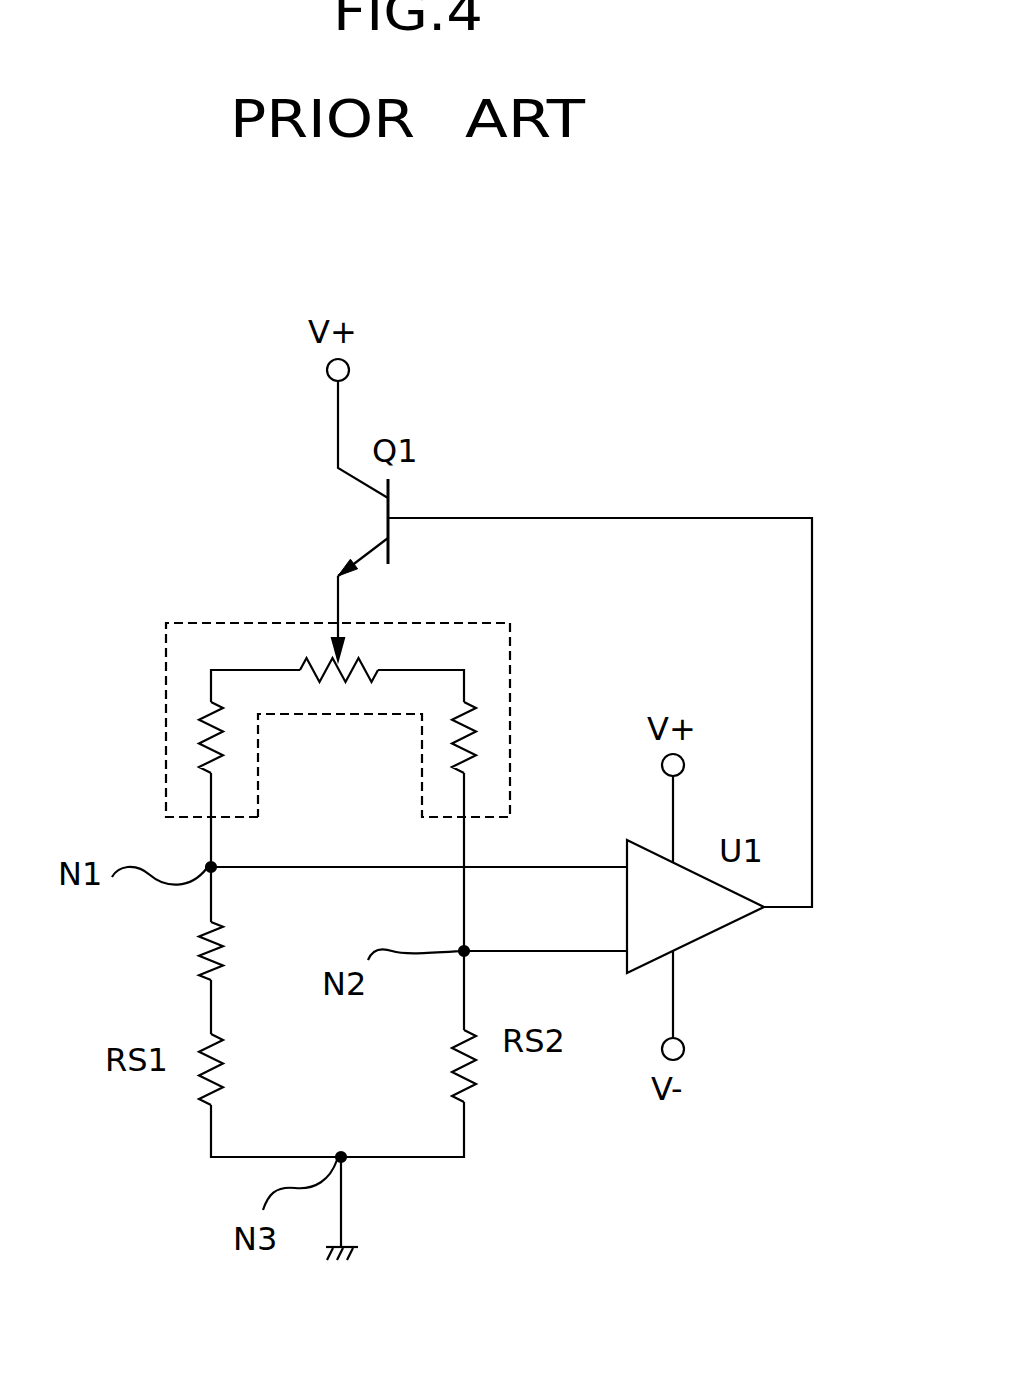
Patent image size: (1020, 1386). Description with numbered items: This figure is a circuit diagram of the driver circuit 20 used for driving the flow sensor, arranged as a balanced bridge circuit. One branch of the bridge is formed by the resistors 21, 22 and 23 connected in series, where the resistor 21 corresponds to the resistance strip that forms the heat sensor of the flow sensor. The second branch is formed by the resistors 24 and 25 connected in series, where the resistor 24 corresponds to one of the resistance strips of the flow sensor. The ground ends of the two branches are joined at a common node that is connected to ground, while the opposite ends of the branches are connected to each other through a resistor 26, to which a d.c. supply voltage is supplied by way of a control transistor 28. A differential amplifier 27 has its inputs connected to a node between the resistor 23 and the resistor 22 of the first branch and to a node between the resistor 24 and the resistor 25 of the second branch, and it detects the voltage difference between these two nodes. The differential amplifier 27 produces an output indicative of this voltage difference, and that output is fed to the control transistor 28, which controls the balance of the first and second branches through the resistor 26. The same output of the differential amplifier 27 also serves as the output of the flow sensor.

The driver circuit 20 is at (722, 407).
The resistor 21 is at (203, 1100).
The resistor 22 is at (205, 958).
The resistor 23 is at (205, 745).
The resistor 24 is at (470, 1085).
The resistor 25 is at (470, 730).
The resistor 26 is at (305, 665).
The differential amplifier 27 is at (732, 927).
The control transistor 28 is at (402, 488).